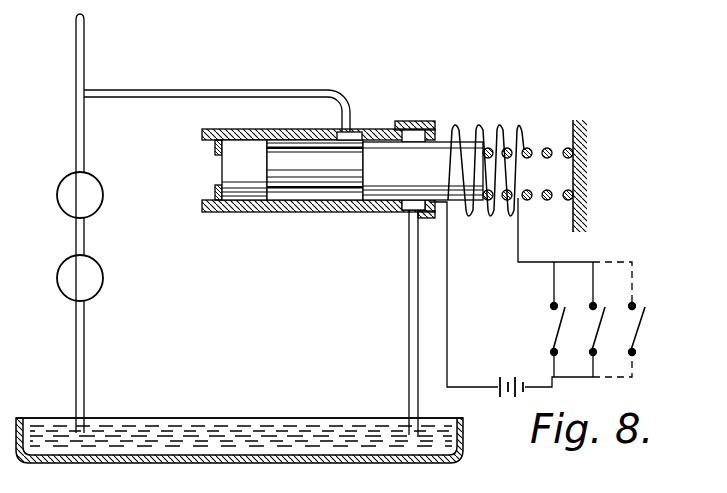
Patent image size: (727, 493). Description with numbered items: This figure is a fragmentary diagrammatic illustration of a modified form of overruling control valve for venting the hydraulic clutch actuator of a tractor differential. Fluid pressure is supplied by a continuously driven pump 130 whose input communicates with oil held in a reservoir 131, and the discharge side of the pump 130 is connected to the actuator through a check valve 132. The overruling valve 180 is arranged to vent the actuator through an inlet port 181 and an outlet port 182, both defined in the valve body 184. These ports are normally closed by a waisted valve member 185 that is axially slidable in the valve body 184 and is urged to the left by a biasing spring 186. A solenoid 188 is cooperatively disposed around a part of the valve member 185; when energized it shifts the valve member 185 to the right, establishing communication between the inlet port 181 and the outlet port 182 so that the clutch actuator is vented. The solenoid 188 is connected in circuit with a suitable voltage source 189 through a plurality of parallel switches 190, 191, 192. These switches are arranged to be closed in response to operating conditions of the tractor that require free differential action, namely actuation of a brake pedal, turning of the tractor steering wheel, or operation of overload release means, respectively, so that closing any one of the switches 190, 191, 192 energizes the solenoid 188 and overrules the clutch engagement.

The pump 130 is at (102, 270).
The reservoir 131 is at (181, 445).
The check valve 132 is at (102, 186).
The overruling valve 180 is at (285, 214).
The inlet port 181 is at (357, 135).
The outlet port 182 is at (407, 208).
The valve body 184 is at (238, 201).
The waisted valve member 185 is at (230, 167).
The biasing spring 186 is at (527, 150).
The solenoid 188 is at (478, 125).
The voltage source 189 is at (498, 379).
The switch 190 is at (562, 330).
The switch 191 is at (600, 330).
The switch 192 is at (646, 328).